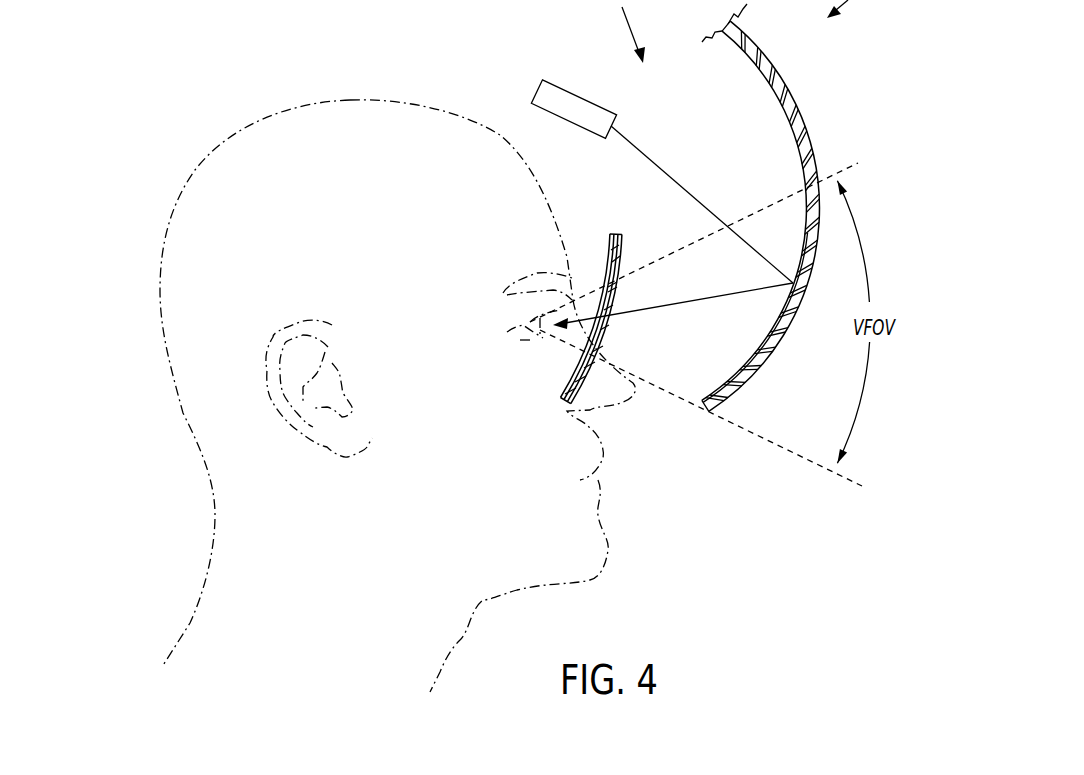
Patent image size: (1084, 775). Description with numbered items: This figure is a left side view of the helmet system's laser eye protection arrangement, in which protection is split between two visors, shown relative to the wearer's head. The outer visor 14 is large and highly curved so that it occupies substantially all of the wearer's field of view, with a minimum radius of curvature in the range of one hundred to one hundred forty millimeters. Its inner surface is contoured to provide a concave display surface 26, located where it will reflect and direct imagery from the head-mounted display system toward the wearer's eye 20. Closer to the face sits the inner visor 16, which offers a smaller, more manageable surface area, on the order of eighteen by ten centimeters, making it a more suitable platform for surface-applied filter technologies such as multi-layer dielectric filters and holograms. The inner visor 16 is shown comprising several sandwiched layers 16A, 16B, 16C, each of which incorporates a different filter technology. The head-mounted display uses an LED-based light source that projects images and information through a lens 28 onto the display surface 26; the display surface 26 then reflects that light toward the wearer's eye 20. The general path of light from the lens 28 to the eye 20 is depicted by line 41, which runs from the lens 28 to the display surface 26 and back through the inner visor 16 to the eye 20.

The outer visor 14 is at (786, 336).
The inner visor 16 is at (615, 281).
The sandwiched layer 16A is at (594, 319).
The sandwiched layer 16B is at (589, 316).
The sandwiched layer 16C is at (585, 316).
The eye 20 is at (527, 322).
The display surface 26 is at (760, 347).
The lens 28 is at (566, 85).
The line 41 is at (668, 172).